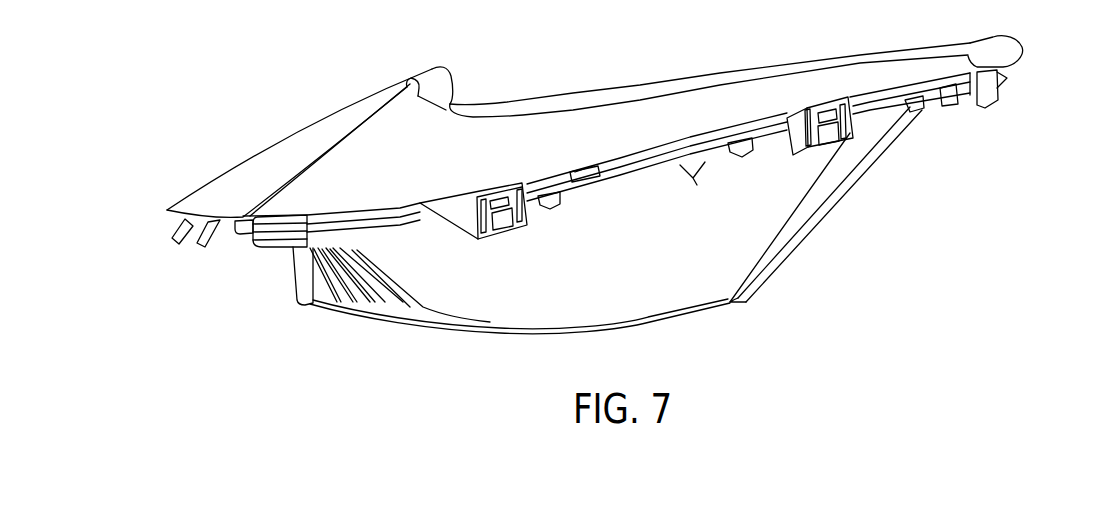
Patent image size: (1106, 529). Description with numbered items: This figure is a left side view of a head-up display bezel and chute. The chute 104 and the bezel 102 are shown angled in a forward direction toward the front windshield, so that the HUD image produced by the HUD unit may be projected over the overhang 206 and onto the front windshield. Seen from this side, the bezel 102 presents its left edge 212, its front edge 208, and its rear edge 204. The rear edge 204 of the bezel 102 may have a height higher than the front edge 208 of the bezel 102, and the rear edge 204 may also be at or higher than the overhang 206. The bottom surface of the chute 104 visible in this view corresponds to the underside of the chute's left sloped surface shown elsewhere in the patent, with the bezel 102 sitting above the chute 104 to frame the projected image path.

The overhang 206 is at (295, 101).
The rear edge 204 is at (1025, 50).
The front edge 208 is at (167, 210).
The bezel 102 is at (320, 195).
The chute 104 is at (745, 222).
The left edge 212 is at (593, 142).